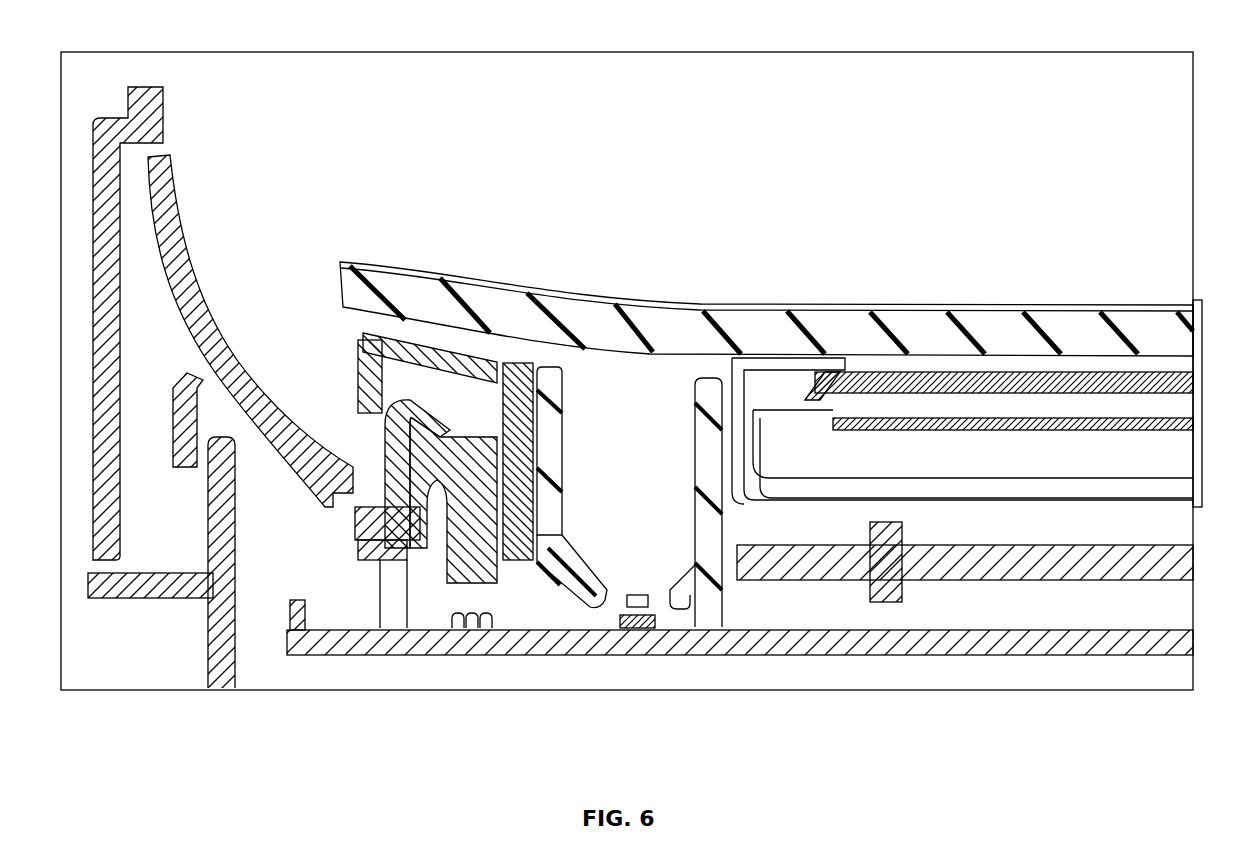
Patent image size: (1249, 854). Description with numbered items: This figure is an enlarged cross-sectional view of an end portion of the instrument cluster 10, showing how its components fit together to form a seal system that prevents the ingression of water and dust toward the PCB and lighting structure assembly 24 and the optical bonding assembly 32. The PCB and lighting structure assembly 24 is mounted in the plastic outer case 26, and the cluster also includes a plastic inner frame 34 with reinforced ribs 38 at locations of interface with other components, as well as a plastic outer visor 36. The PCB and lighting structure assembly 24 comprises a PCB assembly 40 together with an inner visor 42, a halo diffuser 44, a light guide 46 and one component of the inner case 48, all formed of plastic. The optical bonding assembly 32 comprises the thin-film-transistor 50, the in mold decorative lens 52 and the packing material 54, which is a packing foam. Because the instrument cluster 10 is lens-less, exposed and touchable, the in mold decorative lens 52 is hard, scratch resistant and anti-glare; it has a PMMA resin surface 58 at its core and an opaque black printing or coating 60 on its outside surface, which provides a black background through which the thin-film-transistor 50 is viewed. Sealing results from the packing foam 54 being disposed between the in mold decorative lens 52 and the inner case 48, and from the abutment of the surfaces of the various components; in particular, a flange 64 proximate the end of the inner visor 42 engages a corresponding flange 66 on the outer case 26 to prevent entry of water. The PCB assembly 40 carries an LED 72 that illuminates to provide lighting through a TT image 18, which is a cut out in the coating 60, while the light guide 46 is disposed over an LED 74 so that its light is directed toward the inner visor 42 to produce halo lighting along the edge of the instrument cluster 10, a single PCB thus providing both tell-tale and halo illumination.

The instrument cluster 10 is at (1078, 50).
The tell-tale image 18 is at (766, 291).
The PCB and lighting structure assembly 24 is at (740, 638).
The outer case 26 is at (222, 610).
The optical bonding assembly 32 is at (1203, 452).
The inner frame 34 is at (1105, 585).
The outer visor 36 is at (100, 332).
The reinforced ribs 38 is at (885, 605).
The PCB assembly 40 is at (778, 642).
The inner visor 42 is at (172, 233).
The halo diffuser 44 is at (380, 457).
The light guide 46 is at (458, 555).
The inner case 48 is at (493, 370).
The thin-film-transistor 50 is at (712, 434).
The in mold decorative lens 52 is at (740, 358).
The packing material 54 is at (418, 340).
The PMMA surface 58 is at (965, 335).
The opaque black printing or coating 60 is at (660, 300).
The flange 64 is at (173, 432).
The flange 66 is at (223, 495).
The LED 72 is at (628, 630).
The LED 74 is at (485, 612).